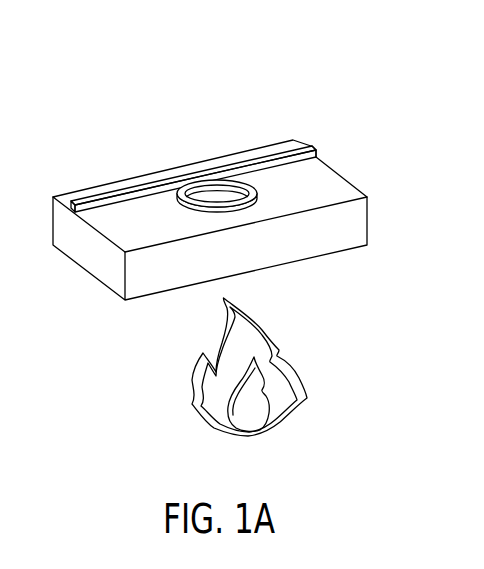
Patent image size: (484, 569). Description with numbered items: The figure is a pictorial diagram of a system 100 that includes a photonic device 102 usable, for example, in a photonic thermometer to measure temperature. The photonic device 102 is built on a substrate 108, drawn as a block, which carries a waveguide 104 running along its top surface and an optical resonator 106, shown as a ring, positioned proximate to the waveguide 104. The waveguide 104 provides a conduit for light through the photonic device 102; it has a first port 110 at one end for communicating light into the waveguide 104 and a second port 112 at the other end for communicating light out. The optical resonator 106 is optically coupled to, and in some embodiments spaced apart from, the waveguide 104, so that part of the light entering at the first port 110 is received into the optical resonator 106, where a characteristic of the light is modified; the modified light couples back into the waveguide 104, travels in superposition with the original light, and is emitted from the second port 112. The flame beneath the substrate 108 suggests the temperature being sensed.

The system 100 is at (304, 41).
The photonic device 102 is at (187, 169).
The waveguide 104 is at (132, 191).
The optical resonator 106 is at (253, 207).
The substrate 108 is at (153, 278).
The first port 110 is at (67, 199).
The second port 112 is at (320, 143).